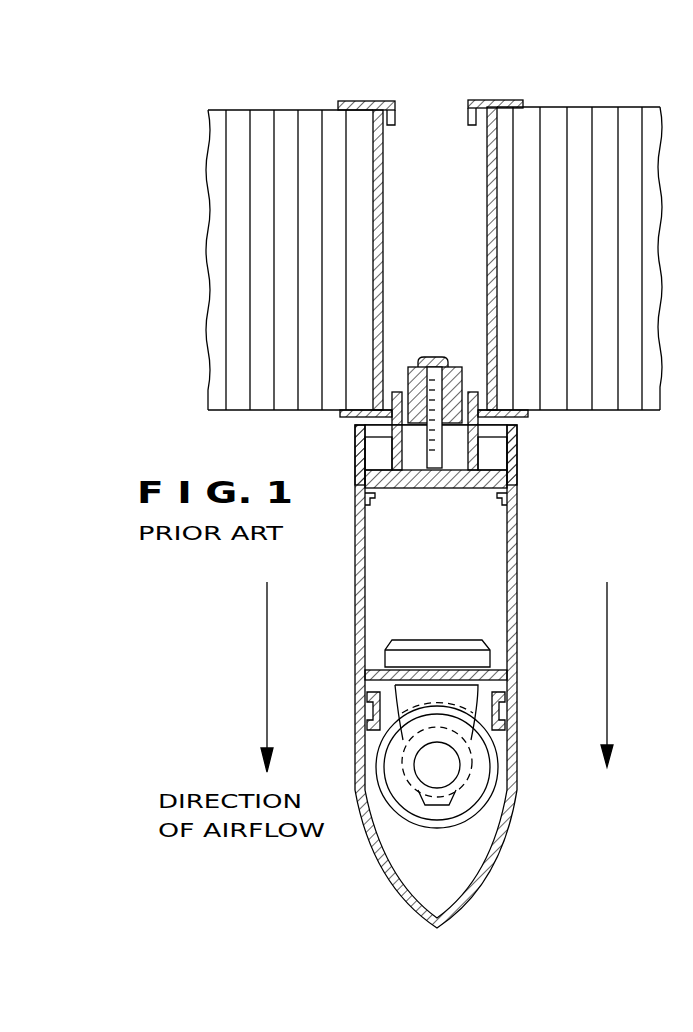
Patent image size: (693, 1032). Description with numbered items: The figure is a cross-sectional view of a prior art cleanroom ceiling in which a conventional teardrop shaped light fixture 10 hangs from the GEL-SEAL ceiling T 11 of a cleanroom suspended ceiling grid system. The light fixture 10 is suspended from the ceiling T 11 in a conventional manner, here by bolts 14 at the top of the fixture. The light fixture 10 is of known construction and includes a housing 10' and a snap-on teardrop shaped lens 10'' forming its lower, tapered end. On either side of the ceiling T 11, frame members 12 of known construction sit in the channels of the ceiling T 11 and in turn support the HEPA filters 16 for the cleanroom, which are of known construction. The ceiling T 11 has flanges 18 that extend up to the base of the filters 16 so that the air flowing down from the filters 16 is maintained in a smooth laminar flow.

The teardrop shaped light fixture 10 is at (466, 660).
The housing 10' is at (394, 611).
The snap-on teardrop shaped lens 10'' is at (393, 756).
The ceiling T 11 is at (355, 447).
The frame members 12 is at (483, 186).
The bolts 14 is at (432, 360).
The HEPA filters 16 is at (285, 110).
The flanges 18 is at (518, 462).